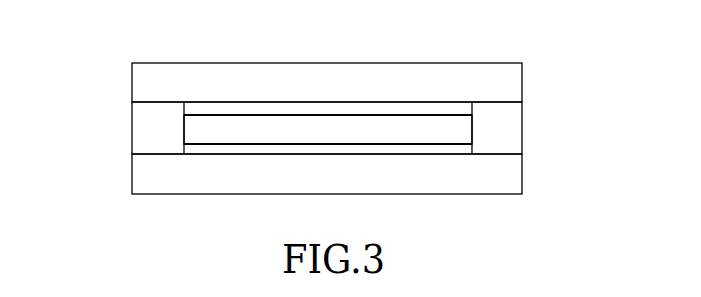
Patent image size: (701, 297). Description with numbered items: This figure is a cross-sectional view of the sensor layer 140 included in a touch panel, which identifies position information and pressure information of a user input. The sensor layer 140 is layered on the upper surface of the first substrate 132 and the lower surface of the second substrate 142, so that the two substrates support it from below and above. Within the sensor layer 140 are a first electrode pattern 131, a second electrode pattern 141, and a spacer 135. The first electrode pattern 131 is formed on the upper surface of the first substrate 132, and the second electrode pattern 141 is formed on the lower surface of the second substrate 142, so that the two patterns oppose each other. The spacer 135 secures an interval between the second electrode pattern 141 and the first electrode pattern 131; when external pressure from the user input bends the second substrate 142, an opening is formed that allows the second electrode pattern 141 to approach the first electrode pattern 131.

The sensor layer 140 is at (127, 100).
The second electrode pattern 141 is at (465, 110).
The second substrate 142 is at (508, 85).
The spacer 135 is at (503, 134).
The first electrode pattern 131 is at (462, 147).
The first substrate 132 is at (508, 181).